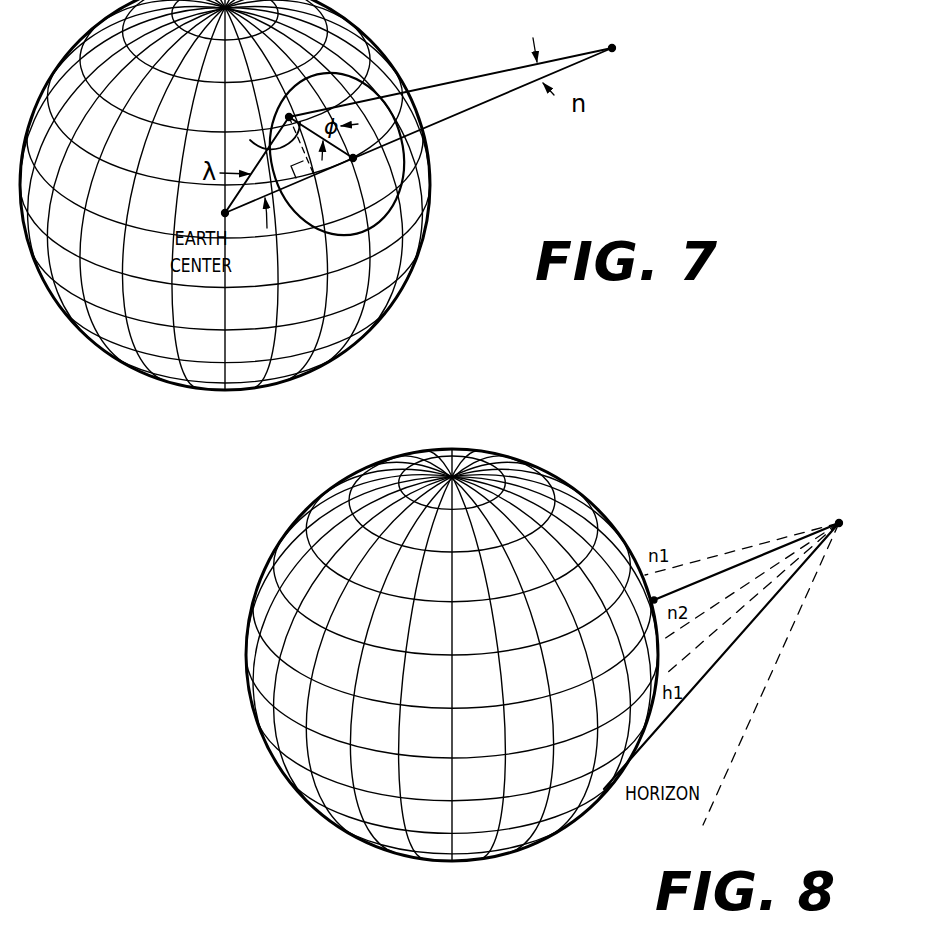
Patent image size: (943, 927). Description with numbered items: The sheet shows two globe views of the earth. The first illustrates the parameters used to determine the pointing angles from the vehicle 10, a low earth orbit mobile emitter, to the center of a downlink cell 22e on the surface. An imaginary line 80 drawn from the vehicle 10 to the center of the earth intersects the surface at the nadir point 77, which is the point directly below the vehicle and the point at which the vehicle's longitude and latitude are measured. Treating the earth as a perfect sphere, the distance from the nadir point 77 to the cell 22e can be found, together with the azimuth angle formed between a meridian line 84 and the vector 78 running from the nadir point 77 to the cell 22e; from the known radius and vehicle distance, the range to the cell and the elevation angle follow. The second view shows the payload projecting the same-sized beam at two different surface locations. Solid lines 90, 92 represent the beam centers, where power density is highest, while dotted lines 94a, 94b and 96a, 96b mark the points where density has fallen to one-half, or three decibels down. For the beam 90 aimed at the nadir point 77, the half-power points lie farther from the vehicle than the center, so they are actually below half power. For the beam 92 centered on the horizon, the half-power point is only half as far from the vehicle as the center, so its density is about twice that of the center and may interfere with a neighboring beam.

In FIG. 7, the vehicle 10 is at (617, 41).
In FIG. 8, the vehicle 10 is at (845, 519).
In FIG. 7, the downlink cell 22e is at (288, 116).
In FIG. 7, the nadir point 77 is at (383, 174).
In FIG. 8, the nadir point 77 is at (652, 603).
In FIG. 7, the vector 78 is at (252, 141).
In FIG. 7, the imaginary line 80 is at (474, 104).
In FIG. 7, the meridian line 84 is at (377, 278).
In FIG. 8, the meridian line 84 is at (452, 655).
In FIG. 8, the beam 90 is at (766, 550).
In FIG. 8, the beam 92 is at (743, 631).
In FIG. 8, the dotted line 94a is at (724, 553).
In FIG. 8, the dotted line 94b is at (766, 574).
In FIG. 8, the dotted line 96a is at (772, 585).
In FIG. 8, the dotted line 96b is at (770, 664).